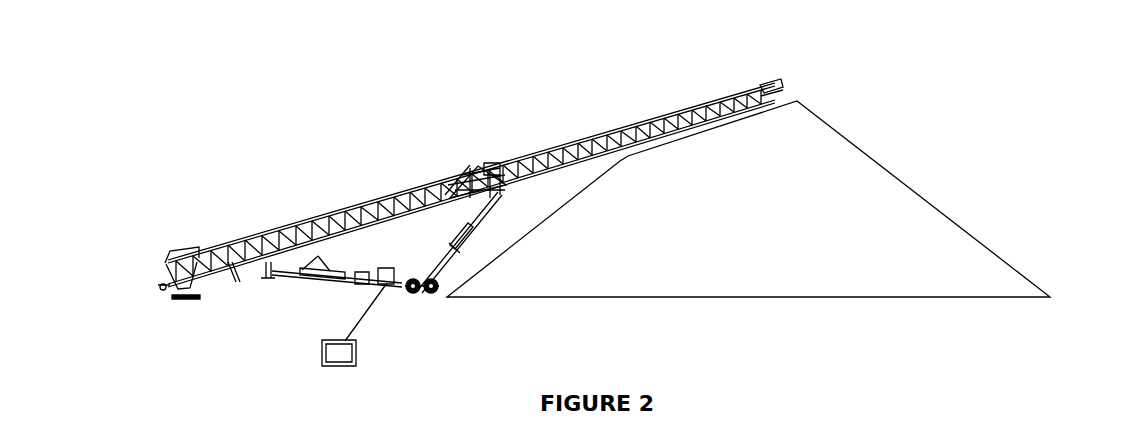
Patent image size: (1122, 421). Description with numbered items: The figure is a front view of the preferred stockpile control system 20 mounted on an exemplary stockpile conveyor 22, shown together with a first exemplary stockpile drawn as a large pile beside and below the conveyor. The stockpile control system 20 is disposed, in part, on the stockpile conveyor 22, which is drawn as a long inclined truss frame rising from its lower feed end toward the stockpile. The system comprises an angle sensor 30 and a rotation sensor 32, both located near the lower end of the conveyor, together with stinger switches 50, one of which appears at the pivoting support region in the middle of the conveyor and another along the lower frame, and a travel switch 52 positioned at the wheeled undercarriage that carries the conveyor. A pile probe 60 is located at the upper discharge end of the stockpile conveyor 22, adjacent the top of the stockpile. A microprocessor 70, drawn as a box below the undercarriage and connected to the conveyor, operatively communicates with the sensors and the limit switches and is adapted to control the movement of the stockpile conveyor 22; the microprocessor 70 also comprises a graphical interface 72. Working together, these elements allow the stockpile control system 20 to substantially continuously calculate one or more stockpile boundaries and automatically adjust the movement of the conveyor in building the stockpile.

The stockpile control system 20 is at (476, 128).
The stockpile conveyor 22 is at (438, 177).
The angle sensor 30 is at (258, 277).
The rotation sensor 32 is at (200, 297).
The stinger switches 50 is at (486, 185).
The travel switch 52 is at (423, 298).
The pile probe 60 is at (776, 82).
The microprocessor 70 is at (357, 358).
The graphical interface 72 is at (335, 356).